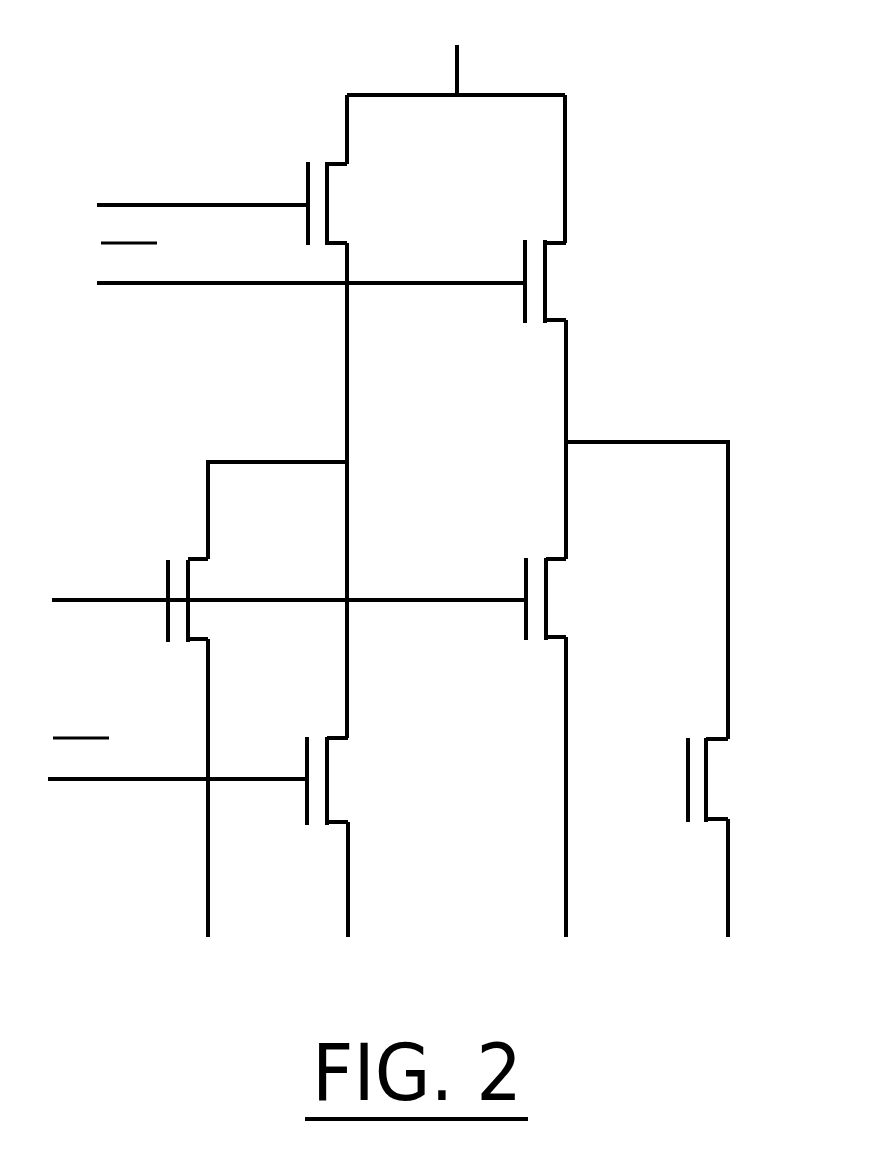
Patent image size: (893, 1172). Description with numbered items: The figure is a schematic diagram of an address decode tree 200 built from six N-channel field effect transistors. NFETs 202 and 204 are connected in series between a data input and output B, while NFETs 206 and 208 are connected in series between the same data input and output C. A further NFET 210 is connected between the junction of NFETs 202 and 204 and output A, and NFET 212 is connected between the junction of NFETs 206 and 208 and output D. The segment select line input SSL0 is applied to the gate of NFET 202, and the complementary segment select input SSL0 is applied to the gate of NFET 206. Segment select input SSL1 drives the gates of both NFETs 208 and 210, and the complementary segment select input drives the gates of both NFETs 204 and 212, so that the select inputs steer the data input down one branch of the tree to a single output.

The address decode tree 200 is at (410, 500).
The N-channel field effect transistor 202 is at (351, 203).
The N-channel field effect transistor 204 is at (346, 781).
The N-channel field effect transistor 206 is at (567, 281).
The N-channel field effect transistor 208 is at (568, 599).
The N-channel field effect transistor 210 is at (210, 600).
The N-channel field effect transistor 212 is at (730, 780).